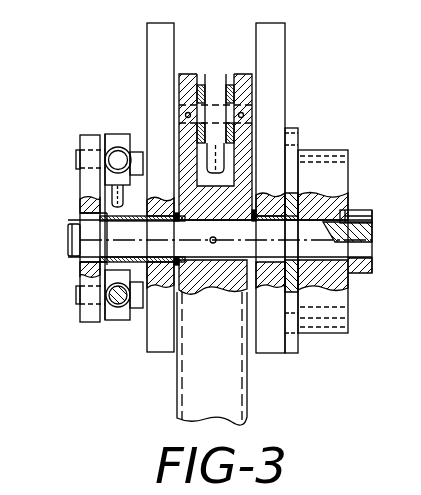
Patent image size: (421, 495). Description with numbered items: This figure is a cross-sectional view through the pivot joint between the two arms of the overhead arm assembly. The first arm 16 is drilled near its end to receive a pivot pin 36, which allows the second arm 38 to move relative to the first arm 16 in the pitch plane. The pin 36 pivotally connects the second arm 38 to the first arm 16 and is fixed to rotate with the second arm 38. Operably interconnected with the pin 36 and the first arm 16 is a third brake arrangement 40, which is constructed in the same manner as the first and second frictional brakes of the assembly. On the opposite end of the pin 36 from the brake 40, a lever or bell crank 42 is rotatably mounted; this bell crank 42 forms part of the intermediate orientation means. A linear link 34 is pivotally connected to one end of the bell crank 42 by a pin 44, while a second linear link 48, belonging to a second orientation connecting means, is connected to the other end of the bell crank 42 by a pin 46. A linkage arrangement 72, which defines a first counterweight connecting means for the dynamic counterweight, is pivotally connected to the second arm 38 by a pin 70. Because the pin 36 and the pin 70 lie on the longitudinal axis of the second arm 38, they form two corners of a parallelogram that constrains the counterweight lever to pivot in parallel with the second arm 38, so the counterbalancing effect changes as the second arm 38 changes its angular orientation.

The first arm 16 is at (157, 52).
The linear link 34 is at (119, 140).
The pivot pin 36 is at (68, 240).
The second arm 38 is at (235, 380).
The third brake arrangement 40 is at (309, 138).
The bell crank 42 is at (88, 186).
The pin 44 is at (77, 160).
The pin 46 is at (77, 296).
The linear link 48 is at (120, 315).
The pin 70 is at (225, 103).
The linkage arrangement 72 is at (212, 88).